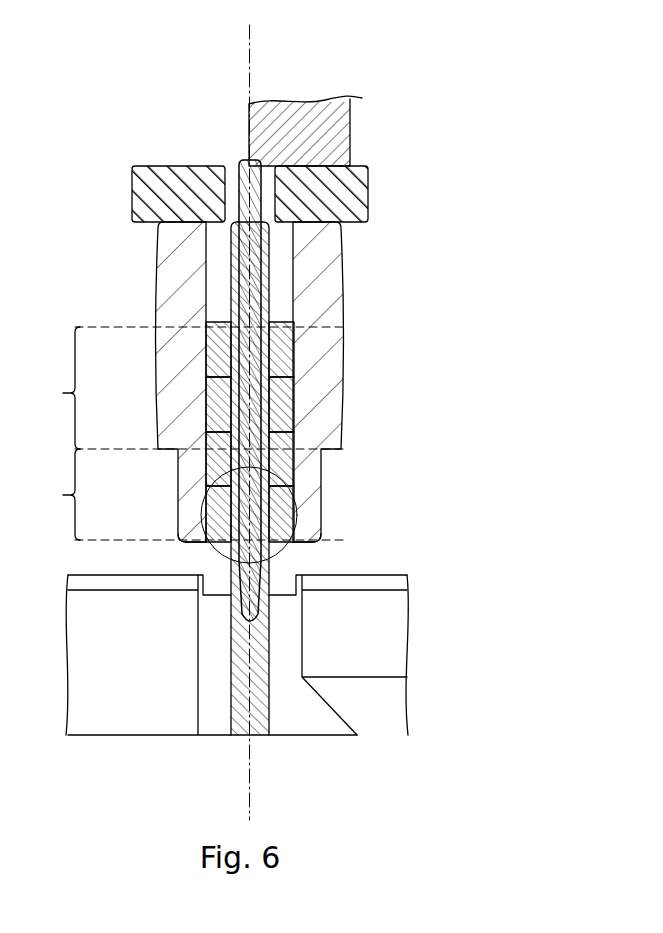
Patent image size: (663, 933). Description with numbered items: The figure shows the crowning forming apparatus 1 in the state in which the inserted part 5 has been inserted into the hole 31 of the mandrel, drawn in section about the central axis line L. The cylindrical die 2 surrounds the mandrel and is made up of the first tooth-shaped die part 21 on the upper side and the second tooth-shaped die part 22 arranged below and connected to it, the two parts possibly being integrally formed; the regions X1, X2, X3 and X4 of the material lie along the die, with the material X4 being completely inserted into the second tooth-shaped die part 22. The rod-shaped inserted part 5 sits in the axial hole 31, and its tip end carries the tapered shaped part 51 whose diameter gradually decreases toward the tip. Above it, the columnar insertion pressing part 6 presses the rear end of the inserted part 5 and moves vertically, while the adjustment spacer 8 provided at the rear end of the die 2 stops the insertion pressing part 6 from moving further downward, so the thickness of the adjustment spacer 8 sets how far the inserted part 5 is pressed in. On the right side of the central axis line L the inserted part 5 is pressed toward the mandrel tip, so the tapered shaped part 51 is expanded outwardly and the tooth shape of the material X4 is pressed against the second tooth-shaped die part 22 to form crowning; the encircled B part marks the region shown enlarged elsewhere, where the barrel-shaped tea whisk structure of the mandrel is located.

The crowning forming apparatus 1 is at (398, 92).
The cylindrical die 2 is at (178, 250).
The inserted part 5 is at (238, 160).
The insertion pressing part 6 is at (350, 136).
The adjustment spacer 8 is at (131, 192).
The first tooth-shaped die part 21 is at (184, 388).
The second tooth-shaped die part 22 is at (184, 494).
The hole 31 is at (233, 292).
The tapered shaped part 51 is at (228, 537).
The material X1 is at (206, 352).
The second heating element X2 is at (206, 405).
The third heating element X3 is at (206, 472).
The material X4 is at (206, 515).
The B part B is at (290, 463).
The central axis line L is at (258, 66).